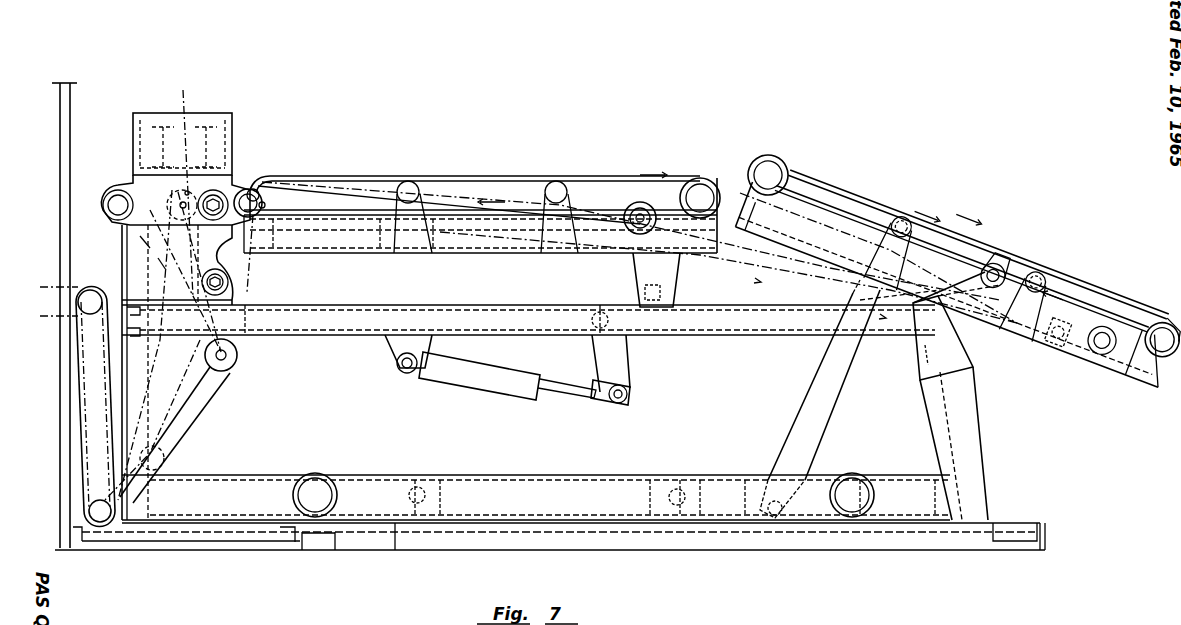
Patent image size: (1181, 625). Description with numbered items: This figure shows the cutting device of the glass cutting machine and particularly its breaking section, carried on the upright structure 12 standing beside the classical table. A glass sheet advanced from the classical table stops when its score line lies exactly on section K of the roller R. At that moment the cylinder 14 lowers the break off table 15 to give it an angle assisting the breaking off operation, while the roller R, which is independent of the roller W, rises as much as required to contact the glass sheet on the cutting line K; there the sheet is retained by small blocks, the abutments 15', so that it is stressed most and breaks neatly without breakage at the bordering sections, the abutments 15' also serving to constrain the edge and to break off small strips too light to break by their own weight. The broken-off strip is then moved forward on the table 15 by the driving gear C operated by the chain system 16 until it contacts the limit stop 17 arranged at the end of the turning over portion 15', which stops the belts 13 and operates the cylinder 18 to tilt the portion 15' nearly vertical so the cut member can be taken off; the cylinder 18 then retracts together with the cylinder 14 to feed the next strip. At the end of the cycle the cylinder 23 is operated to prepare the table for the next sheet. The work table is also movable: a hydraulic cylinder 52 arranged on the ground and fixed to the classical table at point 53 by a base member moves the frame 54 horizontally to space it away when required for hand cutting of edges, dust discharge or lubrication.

The upright frame 12 is at (160, 128).
The belts 13 is at (312, 222).
The cylinder 14 is at (503, 380).
The break off table 15 is at (633, 252).
The abutment 15' is at (622, 227).
The chain system 16 is at (200, 382).
The limit stop 17 is at (1163, 318).
The cylinder 18 is at (808, 435).
The cylinder 23 is at (145, 152).
The hydraulic cylinder 52 is at (580, 497).
The point 53 is at (65, 542).
The frame 54 is at (967, 472).
The section K is at (190, 145).
The roller R is at (188, 193).
The driving gear C is at (258, 192).
The roller W is at (265, 204).